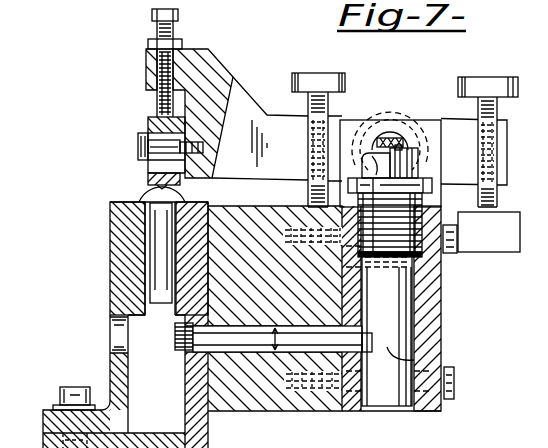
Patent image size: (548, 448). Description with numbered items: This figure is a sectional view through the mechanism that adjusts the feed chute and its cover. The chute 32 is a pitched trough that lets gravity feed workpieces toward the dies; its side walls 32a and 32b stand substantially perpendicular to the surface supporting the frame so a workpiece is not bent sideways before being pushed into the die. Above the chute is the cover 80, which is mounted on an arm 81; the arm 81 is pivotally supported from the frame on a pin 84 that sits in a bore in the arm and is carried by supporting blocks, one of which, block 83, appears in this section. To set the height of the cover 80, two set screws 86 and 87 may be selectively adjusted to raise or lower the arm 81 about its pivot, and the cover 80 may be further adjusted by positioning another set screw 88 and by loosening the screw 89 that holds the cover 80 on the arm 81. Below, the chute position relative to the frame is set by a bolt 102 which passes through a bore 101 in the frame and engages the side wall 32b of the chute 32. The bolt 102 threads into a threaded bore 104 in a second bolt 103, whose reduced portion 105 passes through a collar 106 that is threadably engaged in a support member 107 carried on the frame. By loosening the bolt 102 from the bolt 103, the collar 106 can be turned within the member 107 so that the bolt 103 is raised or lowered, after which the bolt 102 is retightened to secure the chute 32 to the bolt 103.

The chute 32 is at (94, 282).
The chute side wall 32a is at (145, 320).
The chute side wall 32b is at (167, 320).
The cover 80 is at (147, 180).
The arm 81 is at (237, 107).
The block 83 is at (426, 125).
The pin 84 is at (391, 110).
The set screw 86 is at (317, 80).
The set screw 87 is at (490, 85).
The set screw 88 is at (165, 25).
The screw 89 is at (143, 143).
The bore 101 is at (247, 353).
The bolt 102 is at (205, 340).
The bolt 103 is at (392, 311).
The threaded bore 104 is at (387, 347).
The reduced portion 105 is at (412, 143).
The collar 106 is at (430, 203).
The member 107 is at (431, 282).